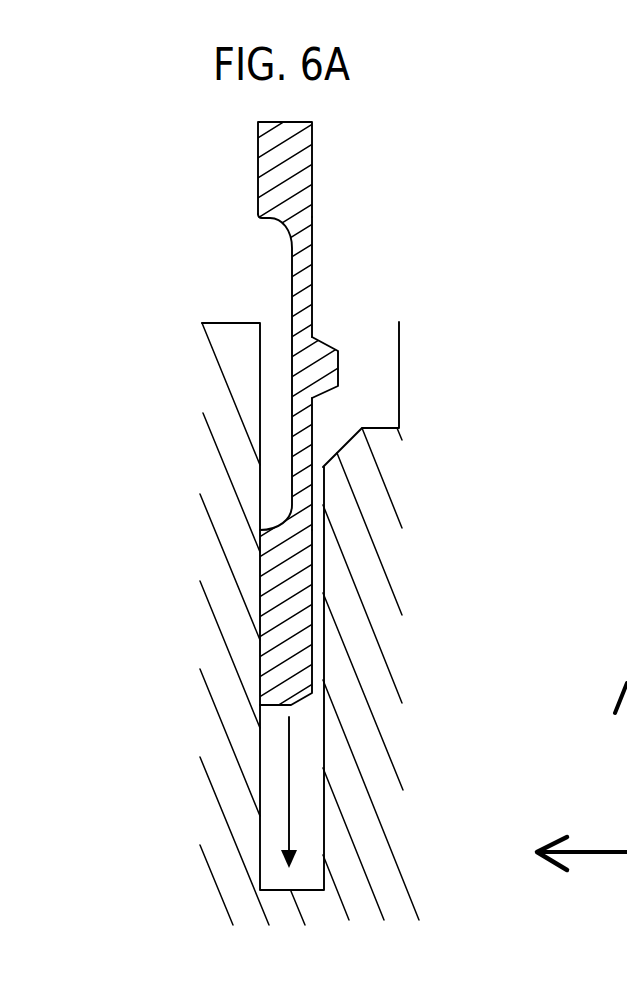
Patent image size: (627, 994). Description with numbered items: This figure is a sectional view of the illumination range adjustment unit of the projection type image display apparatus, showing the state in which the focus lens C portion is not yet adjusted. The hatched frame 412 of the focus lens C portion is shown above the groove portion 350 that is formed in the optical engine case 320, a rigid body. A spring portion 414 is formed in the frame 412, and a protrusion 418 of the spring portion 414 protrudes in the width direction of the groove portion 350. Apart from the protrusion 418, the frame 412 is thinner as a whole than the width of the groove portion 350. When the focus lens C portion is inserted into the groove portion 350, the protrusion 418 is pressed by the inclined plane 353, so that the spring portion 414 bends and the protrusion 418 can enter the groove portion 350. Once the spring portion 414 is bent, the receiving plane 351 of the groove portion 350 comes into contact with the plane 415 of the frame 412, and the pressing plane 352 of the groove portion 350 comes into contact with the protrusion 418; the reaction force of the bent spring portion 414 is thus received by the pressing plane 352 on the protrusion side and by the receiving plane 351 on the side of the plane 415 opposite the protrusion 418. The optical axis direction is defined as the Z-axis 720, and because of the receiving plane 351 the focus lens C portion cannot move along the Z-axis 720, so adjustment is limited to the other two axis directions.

The spring portion 414 is at (296, 413).
The plane 415 is at (260, 177).
The frame 412 is at (292, 232).
The protrusion 418 is at (328, 373).
The receiving plane 351 is at (260, 483).
The inclined plane 353 is at (342, 437).
The pressing plane 352 is at (330, 575).
The optical engine case 320 is at (342, 667).
The groove portion 350 is at (312, 795).
The Z-axis 720 is at (532, 867).